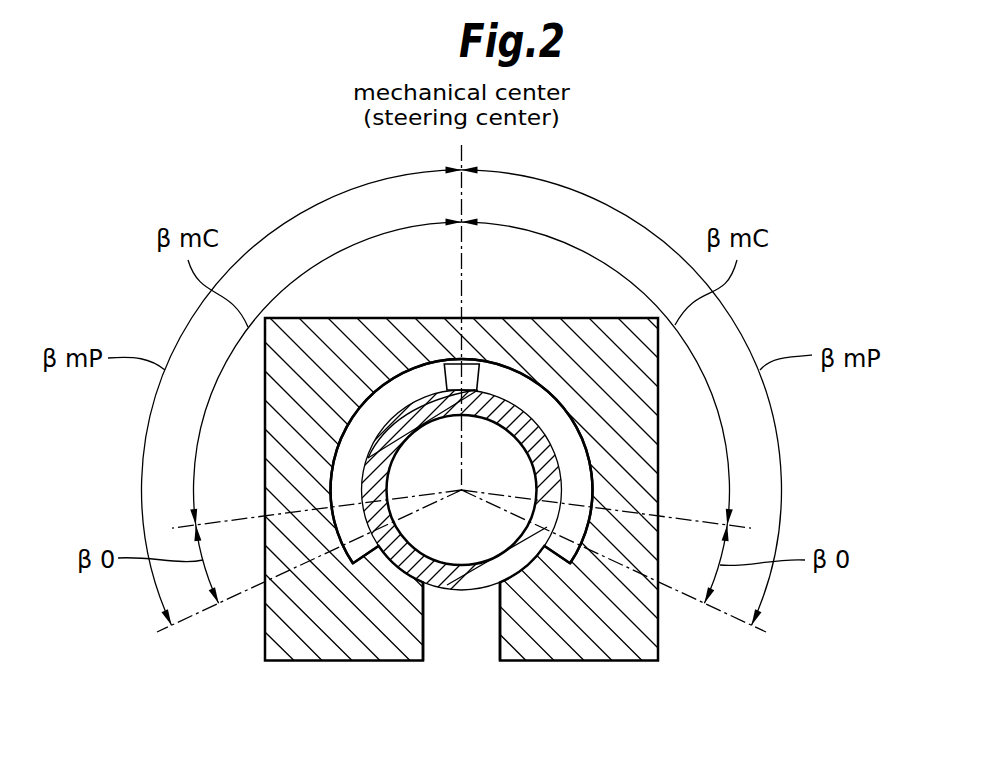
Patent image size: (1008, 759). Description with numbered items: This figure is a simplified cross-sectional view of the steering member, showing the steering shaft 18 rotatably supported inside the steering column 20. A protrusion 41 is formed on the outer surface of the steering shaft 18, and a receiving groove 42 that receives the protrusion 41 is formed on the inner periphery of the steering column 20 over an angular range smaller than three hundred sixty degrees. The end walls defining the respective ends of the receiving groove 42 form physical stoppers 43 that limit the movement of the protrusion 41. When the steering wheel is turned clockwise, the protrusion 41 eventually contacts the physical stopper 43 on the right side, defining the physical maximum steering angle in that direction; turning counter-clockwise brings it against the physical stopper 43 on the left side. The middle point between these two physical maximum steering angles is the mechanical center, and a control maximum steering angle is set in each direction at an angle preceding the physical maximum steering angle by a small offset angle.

The steering shaft 18 is at (513, 415).
The steering column 20 is at (637, 462).
The protrusion 41 is at (470, 366).
The receiving groove 42 is at (377, 390).
The physical stopper 43 is at (378, 565).